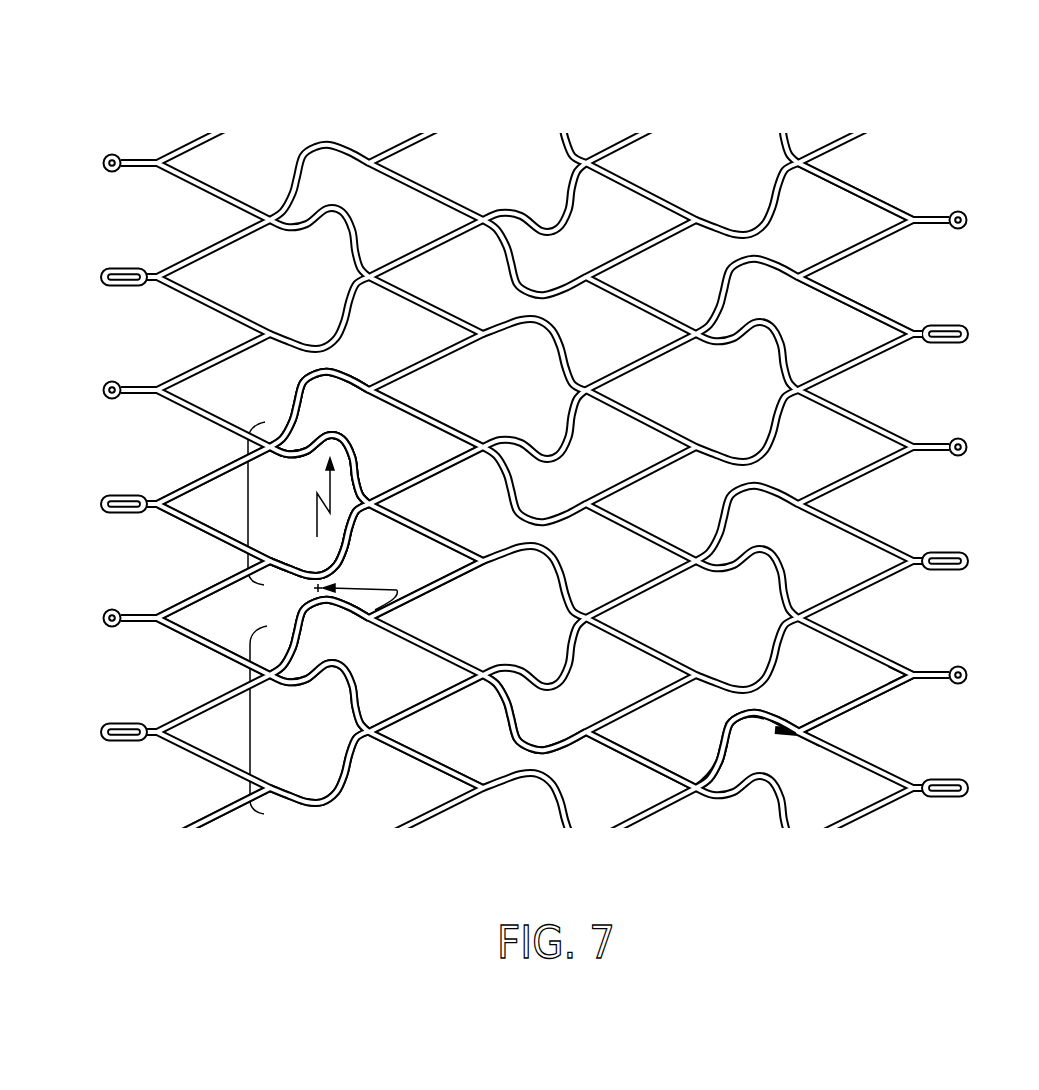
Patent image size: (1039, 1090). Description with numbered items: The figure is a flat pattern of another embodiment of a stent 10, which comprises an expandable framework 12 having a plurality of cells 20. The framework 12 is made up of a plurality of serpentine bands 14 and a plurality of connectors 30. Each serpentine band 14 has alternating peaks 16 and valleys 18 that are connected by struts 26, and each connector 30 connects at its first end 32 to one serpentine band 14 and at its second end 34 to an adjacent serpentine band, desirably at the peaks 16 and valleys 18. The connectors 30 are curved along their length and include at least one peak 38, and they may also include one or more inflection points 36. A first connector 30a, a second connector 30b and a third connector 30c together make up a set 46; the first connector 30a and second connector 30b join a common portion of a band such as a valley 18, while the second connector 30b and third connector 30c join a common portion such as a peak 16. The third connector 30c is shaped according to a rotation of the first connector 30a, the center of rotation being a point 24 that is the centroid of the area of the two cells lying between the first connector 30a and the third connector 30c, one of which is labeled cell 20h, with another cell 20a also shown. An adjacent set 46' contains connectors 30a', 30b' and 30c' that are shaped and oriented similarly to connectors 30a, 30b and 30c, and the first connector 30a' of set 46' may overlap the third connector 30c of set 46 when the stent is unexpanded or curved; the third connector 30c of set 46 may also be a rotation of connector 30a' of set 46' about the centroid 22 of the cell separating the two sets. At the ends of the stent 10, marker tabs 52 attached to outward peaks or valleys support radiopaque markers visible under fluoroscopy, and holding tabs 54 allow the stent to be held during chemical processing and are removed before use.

The stent 10 is at (923, 150).
The expandable framework 12 is at (873, 193).
The serpentine band 14 is at (224, 817).
The peak 16 is at (806, 732).
The valley 18 is at (914, 684).
The cell 20 is at (401, 565).
The cell 20a is at (300, 508).
The cell 20h is at (421, 470).
The centroid 22 is at (397, 609).
The point 24 is at (317, 514).
The strut 26 is at (873, 308).
The connector 30 is at (729, 747).
The first connector 30a is at (293, 409).
The second connector 30b is at (320, 450).
The third connector 30c is at (308, 565).
The first connector 30a' is at (323, 637).
The second connector 30b' is at (319, 705).
The third connector 30c' is at (319, 799).
The first end 32 is at (693, 780).
The second end 34 is at (792, 717).
The inflection point 36 is at (745, 789).
The peak 38 is at (725, 716).
The set 46 is at (230, 503).
The set 46' is at (228, 720).
The marker tab 52 is at (968, 332).
The holding tab 54 is at (967, 446).